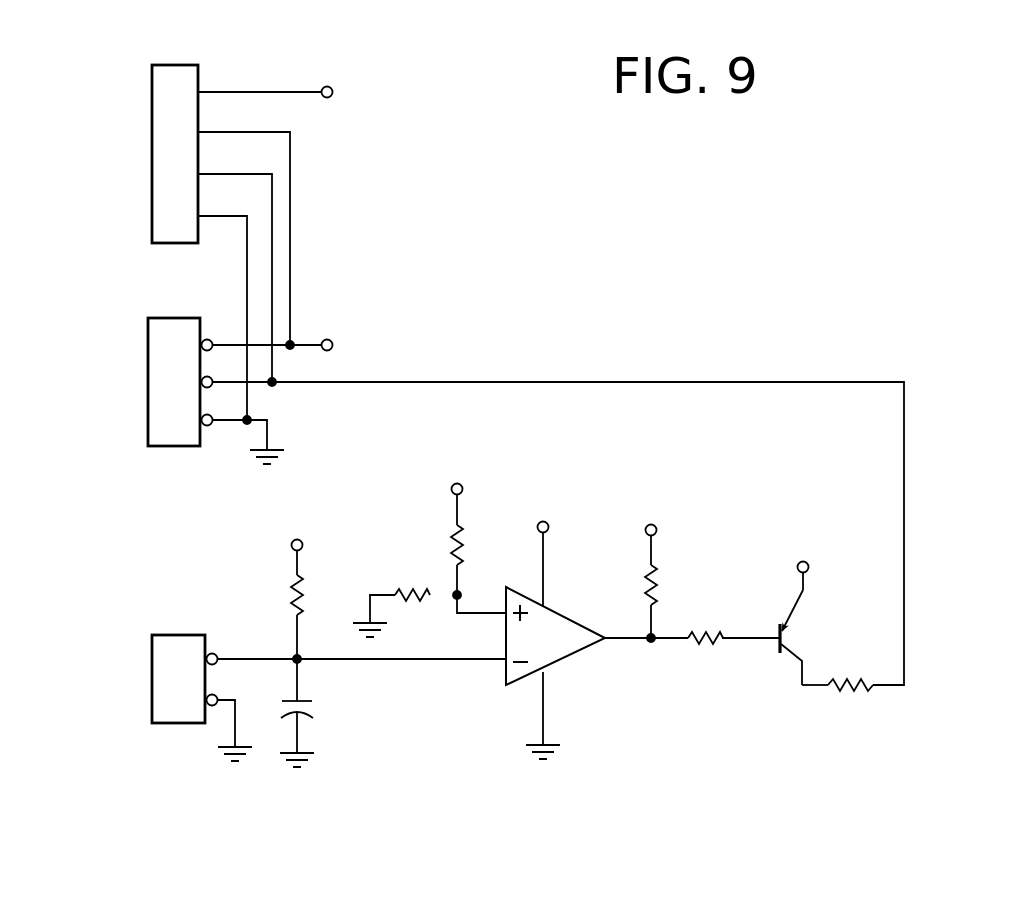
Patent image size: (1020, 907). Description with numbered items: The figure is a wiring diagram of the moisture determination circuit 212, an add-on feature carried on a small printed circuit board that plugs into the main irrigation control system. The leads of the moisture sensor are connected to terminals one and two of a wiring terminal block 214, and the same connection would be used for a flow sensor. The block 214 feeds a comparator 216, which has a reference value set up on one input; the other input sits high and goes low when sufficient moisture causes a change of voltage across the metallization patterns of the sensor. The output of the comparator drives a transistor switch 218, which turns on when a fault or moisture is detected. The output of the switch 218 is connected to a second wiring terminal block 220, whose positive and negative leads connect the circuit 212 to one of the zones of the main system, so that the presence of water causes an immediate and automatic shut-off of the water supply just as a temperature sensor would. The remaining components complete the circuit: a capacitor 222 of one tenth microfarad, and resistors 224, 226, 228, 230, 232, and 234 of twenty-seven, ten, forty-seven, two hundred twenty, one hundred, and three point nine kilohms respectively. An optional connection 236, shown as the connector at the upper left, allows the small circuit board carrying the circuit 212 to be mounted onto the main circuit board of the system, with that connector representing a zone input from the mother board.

The moisture determination circuit 212 is at (416, 212).
The wiring terminal block 214 is at (168, 632).
The comparator 216 is at (578, 652).
The transistor switch 218 is at (770, 650).
The wiring terminal block 220 is at (165, 452).
The capacitor 222 is at (322, 707).
The resistor 224 is at (282, 590).
The resistor 226 is at (448, 530).
The resistor 228 is at (413, 586).
The resistor 230 is at (664, 572).
The resistor 232 is at (706, 624).
The resistor 234 is at (845, 699).
The optional connection 236 is at (200, 72).